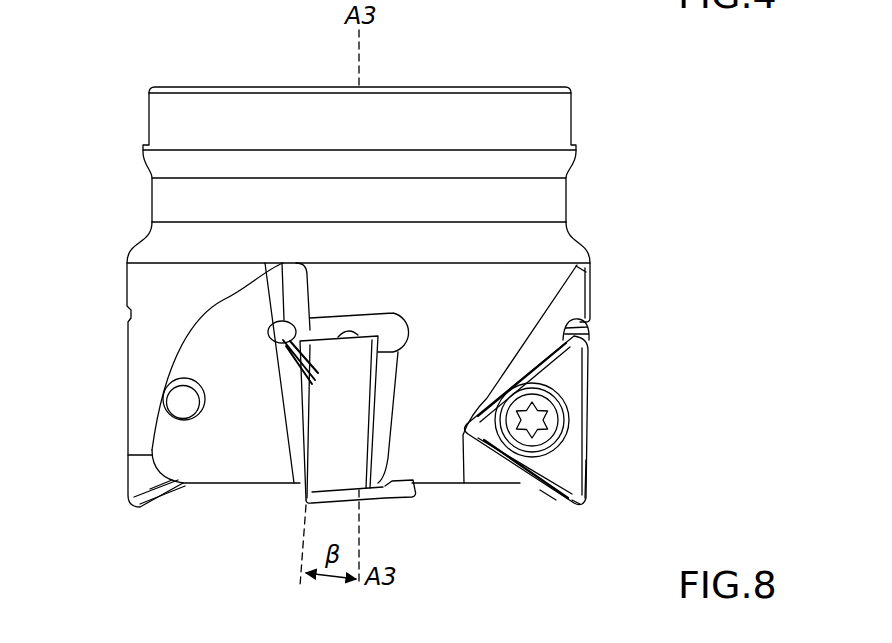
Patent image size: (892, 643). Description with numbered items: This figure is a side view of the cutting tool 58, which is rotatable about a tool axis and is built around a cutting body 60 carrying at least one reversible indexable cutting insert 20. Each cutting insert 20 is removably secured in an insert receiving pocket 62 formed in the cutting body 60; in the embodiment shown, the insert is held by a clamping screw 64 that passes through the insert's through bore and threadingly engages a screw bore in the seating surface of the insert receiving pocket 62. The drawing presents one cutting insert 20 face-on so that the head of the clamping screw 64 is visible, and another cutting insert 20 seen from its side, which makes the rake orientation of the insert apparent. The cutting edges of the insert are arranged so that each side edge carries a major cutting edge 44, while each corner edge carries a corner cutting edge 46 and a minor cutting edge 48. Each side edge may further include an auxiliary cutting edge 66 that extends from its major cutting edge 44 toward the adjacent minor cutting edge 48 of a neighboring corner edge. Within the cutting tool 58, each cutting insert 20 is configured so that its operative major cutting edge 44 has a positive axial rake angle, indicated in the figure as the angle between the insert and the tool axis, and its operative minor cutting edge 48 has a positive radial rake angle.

The cutting tool 58 is at (588, 104).
The cutting body 60 is at (504, 239).
The insert receiving pocket 62 is at (367, 322).
The cutting insert 20 is at (348, 409).
The major cutting edge 44 is at (307, 468).
The clamping screw 64 is at (546, 421).
The corner cutting edge 46 is at (590, 505).
The minor cutting edge 48 is at (577, 506).
The auxiliary cutting edge 66 is at (554, 498).